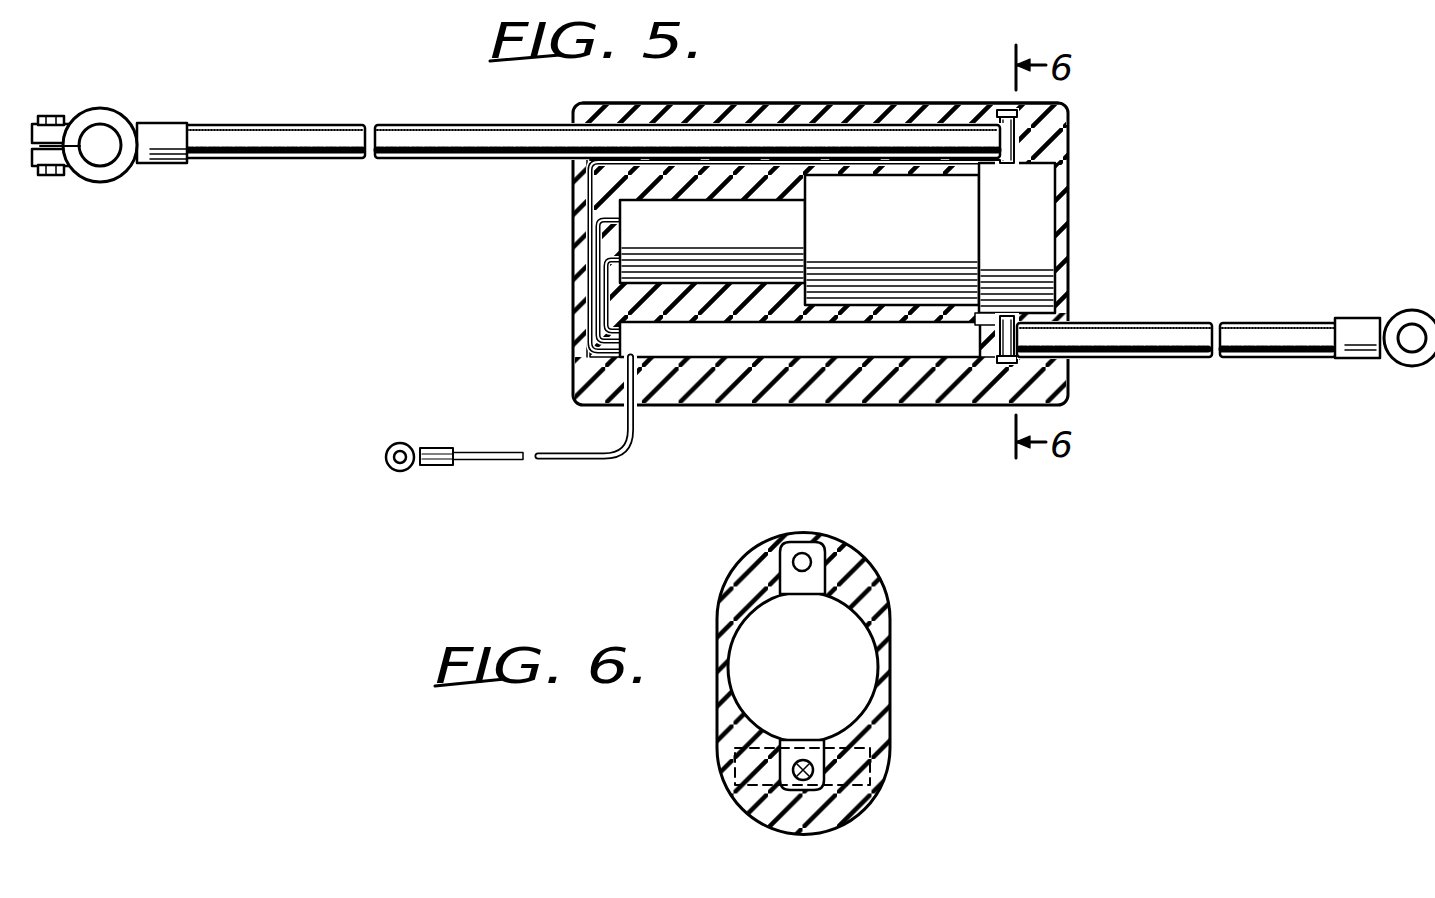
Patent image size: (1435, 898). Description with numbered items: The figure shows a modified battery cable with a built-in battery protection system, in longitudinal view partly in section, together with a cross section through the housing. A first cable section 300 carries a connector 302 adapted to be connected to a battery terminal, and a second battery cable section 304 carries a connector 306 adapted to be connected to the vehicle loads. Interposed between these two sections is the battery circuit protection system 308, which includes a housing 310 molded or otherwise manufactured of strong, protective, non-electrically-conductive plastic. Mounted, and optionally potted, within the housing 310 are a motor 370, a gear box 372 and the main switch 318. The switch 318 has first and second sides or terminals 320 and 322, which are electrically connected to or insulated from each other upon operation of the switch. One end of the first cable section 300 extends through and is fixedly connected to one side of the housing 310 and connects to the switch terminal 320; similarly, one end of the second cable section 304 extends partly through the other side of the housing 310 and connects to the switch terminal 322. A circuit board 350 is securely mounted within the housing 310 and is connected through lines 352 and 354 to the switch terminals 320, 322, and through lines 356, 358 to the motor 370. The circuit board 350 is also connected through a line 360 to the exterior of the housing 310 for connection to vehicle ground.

In FIG. 5, the first cable section 300 is at (395, 122).
In FIG. 6, the first cable section 300 is at (812, 560).
In FIG. 5, the connector 302 is at (113, 110).
In FIG. 5, the second battery cable section 304 is at (1230, 325).
In FIG. 6, the second battery cable section 304 is at (752, 808).
In FIG. 5, the connector 306 is at (1392, 316).
In FIG. 5, the battery circuit protection system 308 is at (886, 96).
In FIG. 5, the housing 310 is at (1068, 152).
In FIG. 6, the housing 310 is at (892, 609).
In FIG. 5, the main switch 318 is at (1047, 228).
In FIG. 6, the main switch 318 is at (862, 668).
In FIG. 5, the switch terminal 320 is at (1003, 108).
In FIG. 6, the switch terminal 320 is at (806, 545).
In FIG. 5, the switch terminal 322 is at (993, 398).
In FIG. 6, the switch terminal 322 is at (785, 796).
In FIG. 5, the circuit board 350 is at (741, 358).
In FIG. 6, the circuit board 350 is at (872, 743).
In FIG. 5, the line 352 is at (592, 258).
In FIG. 5, the line 354 is at (982, 326).
In FIG. 5, the line 356 is at (623, 305).
In FIG. 5, the line 358 is at (600, 290).
In FIG. 5, the line 360 is at (545, 450).
In FIG. 5, the motor 370 is at (748, 239).
In FIG. 5, the gear box 372 is at (920, 249).